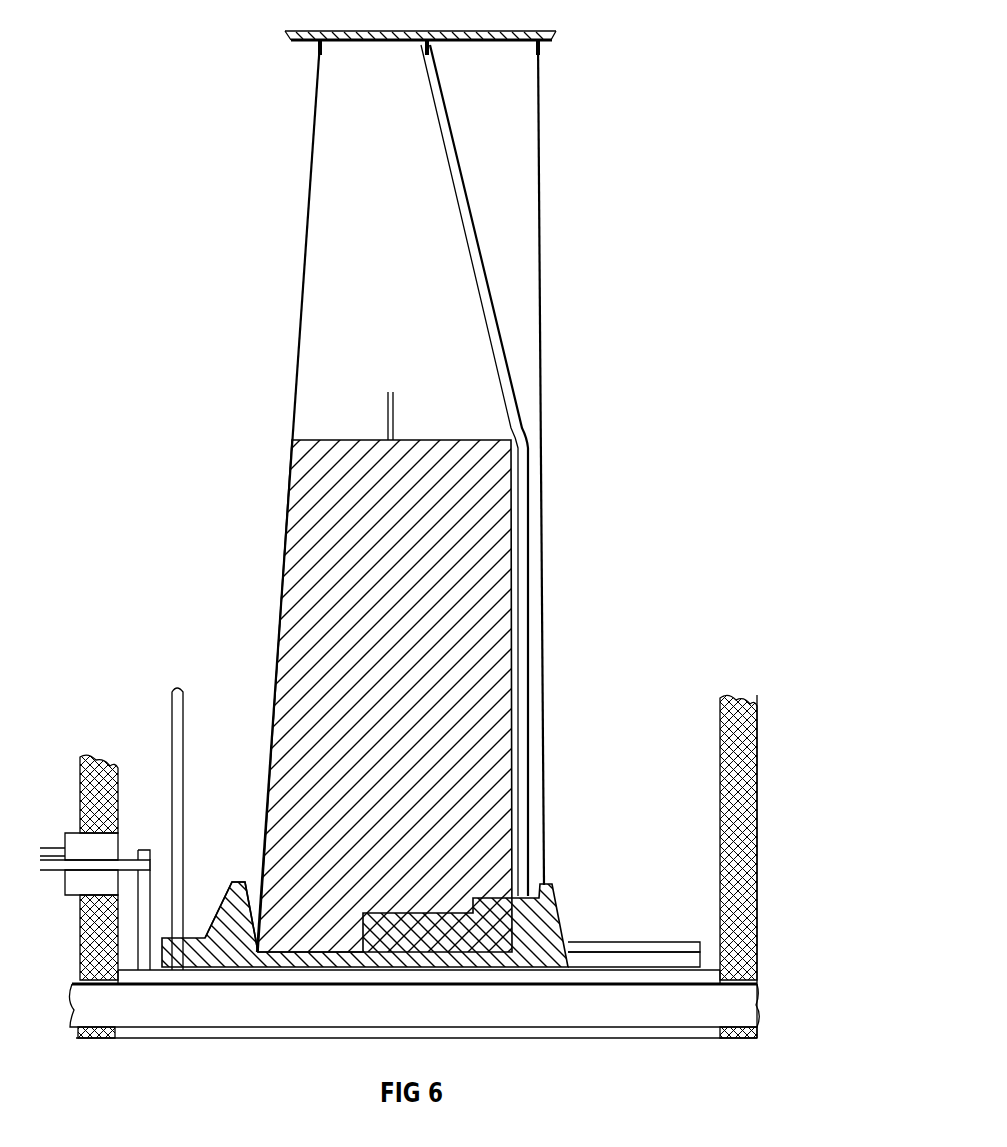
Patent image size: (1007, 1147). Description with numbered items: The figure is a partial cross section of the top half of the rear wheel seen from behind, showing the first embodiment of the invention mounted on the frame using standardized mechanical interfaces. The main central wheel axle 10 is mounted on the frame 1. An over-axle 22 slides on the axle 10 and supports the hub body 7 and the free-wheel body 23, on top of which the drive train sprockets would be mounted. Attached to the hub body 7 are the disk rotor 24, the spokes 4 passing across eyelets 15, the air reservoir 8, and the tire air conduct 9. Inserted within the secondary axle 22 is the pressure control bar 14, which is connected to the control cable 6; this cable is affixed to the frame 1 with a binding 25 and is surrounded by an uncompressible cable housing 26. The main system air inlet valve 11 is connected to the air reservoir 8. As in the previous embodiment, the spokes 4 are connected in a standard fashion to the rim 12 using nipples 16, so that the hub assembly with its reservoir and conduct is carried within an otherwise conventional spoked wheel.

The frame 1 is at (108, 750).
The spokes 4 is at (546, 165).
The control cable 6 is at (128, 852).
The hub body 7 is at (222, 885).
The air reservoir 8 is at (290, 522).
The tire air conduct 9 is at (488, 277).
The main central wheel axle 10 is at (674, 981).
The main system air inlet valve 11 is at (382, 402).
The rim 12 is at (288, 36).
The pressure control bar 14 is at (146, 848).
The eyelets 15 is at (238, 880).
The nipples 16 is at (541, 50).
The over-axle 22 is at (646, 966).
The free-wheel body 23 is at (616, 940).
The disk rotor 24 is at (186, 702).
The binding 25 is at (72, 832).
The uncompressible cable housing 26 is at (52, 847).